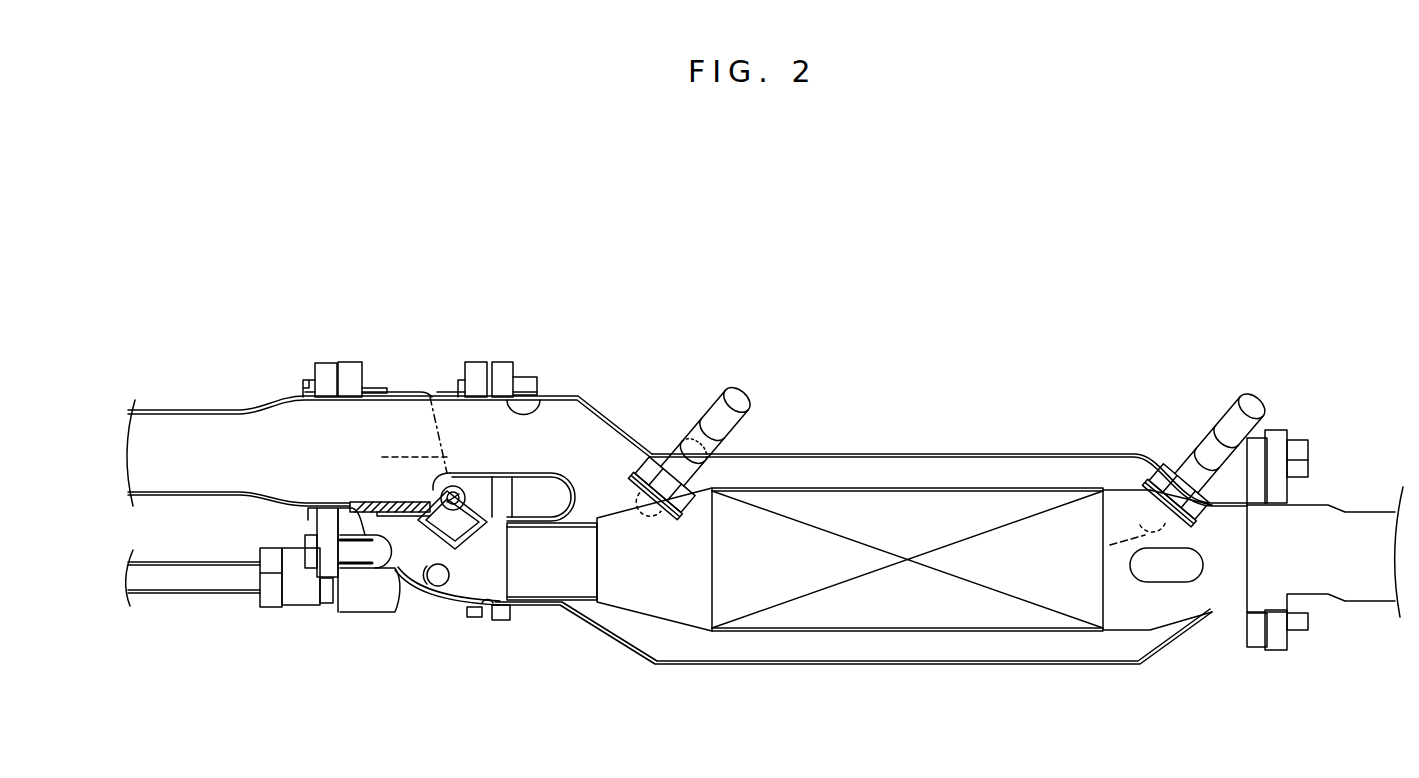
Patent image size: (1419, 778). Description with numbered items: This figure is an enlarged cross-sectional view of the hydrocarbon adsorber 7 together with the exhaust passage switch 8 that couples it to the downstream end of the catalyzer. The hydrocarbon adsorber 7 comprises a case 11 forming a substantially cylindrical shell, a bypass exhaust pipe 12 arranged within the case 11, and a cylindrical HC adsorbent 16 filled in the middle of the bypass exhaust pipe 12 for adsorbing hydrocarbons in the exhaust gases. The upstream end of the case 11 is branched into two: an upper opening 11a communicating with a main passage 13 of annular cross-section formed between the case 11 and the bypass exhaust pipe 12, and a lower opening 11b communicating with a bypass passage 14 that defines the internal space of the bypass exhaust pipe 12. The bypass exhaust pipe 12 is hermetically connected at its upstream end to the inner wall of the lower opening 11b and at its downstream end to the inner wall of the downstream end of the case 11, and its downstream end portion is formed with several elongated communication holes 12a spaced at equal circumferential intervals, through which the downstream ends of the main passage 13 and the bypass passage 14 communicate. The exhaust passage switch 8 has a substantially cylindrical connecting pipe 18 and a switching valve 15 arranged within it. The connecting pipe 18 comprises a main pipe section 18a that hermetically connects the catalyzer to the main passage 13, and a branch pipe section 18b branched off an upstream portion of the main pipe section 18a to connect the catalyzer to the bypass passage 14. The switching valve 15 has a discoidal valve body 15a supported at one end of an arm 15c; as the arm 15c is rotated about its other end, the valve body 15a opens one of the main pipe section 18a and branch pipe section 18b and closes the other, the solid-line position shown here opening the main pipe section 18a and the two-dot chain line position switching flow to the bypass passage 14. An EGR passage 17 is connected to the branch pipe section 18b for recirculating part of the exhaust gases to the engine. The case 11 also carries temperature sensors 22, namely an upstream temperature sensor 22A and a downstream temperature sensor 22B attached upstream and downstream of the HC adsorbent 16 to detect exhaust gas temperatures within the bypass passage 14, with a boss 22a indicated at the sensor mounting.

The hydrocarbon adsorber 7 is at (862, 290).
The exhaust passage switch 8 is at (433, 292).
The case 11 is at (937, 454).
The upper opening 11a is at (540, 398).
The lower opening 11b is at (486, 606).
The bypass exhaust pipe 12 is at (628, 620).
The communication holes 12a is at (1163, 582).
The main passage 13 is at (618, 478).
The bypass passage 14 is at (652, 572).
The switching valve 15 is at (410, 540).
The valve body 15a is at (382, 458).
The arm 15c is at (467, 535).
The HC adsorbent 16 is at (931, 634).
The EGR passage 17 is at (192, 596).
The connecting pipe 18 is at (412, 392).
The main pipe section 18a is at (440, 393).
The branch pipe section 18b is at (424, 598).
The temperature sensors 22 is at (968, 423).
The upstream temperature sensor 22A is at (706, 396).
The downstream temperature sensor 22B is at (1220, 418).
The sensor boss 22a is at (1110, 545).